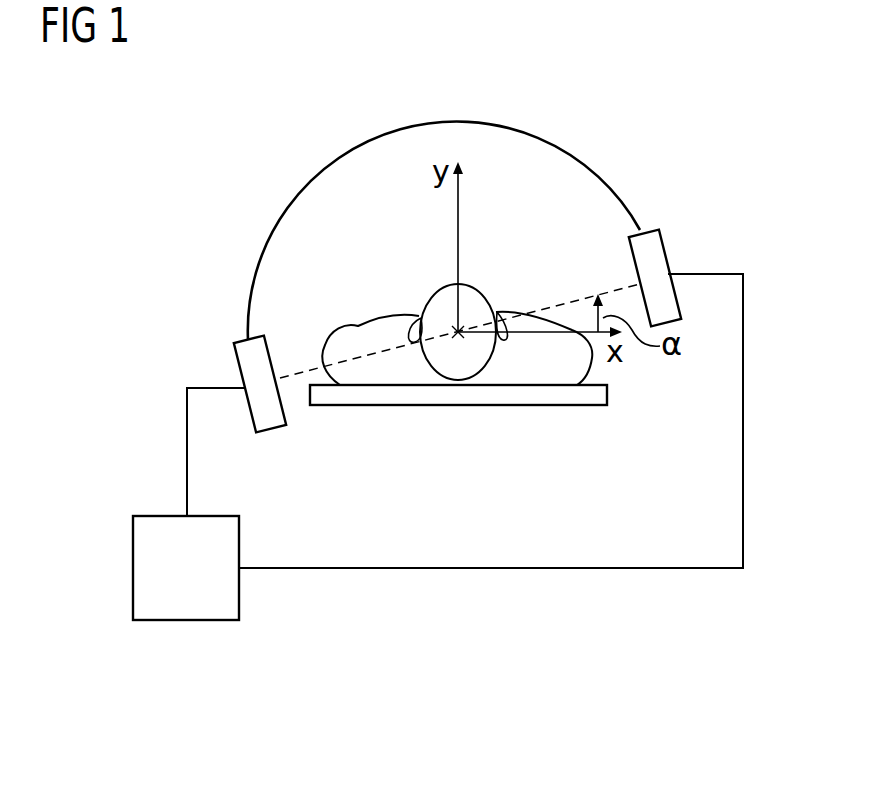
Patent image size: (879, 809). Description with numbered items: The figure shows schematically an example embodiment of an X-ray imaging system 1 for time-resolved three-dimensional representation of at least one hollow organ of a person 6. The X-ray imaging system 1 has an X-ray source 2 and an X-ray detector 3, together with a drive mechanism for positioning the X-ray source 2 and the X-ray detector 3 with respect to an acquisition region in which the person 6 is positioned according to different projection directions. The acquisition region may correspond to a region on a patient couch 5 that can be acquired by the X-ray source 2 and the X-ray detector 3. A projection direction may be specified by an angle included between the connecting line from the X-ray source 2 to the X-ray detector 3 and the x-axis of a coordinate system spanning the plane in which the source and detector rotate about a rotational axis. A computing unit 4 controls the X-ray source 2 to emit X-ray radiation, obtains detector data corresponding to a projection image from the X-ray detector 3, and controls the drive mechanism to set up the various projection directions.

The X-ray imaging system 1 is at (236, 186).
The X-ray source 2 is at (650, 232).
The X-ray detector 3 is at (243, 342).
The computing unit 4 is at (133, 570).
The patient couch 5 is at (556, 406).
The person 6 is at (383, 312).